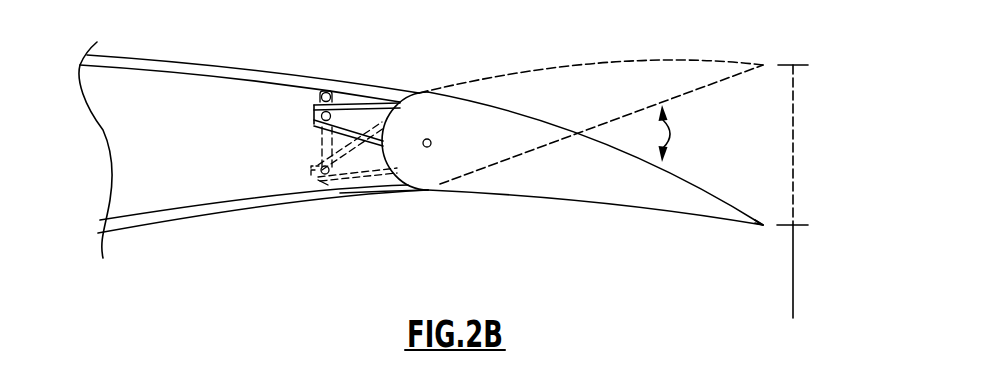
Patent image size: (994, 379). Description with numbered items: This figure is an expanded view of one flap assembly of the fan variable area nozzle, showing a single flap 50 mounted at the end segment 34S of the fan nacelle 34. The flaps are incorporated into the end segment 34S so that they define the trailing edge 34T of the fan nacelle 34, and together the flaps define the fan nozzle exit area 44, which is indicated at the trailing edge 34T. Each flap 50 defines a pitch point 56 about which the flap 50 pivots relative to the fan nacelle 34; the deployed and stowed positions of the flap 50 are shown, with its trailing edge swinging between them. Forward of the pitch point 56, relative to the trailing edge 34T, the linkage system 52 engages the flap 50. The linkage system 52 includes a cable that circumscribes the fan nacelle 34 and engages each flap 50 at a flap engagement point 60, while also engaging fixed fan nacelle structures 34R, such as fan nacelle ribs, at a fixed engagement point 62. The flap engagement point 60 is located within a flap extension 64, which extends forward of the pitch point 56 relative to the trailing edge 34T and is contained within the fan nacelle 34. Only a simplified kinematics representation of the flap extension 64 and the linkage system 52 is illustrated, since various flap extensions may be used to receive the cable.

The fan nacelle 34 is at (264, 135).
The end segment 34S is at (397, 87).
The fixed fan nacelle structures 34R is at (203, 195).
The trailing edge 34T is at (767, 225).
The fan nozzle exit area 44 is at (795, 293).
The flap 50 is at (585, 192).
The linkage system 52 is at (378, 222).
The pitch point 56 is at (430, 139).
The flap engagement point 60 is at (329, 111).
The fixed engagement point 62 is at (326, 92).
The flap extension 64 is at (386, 113).